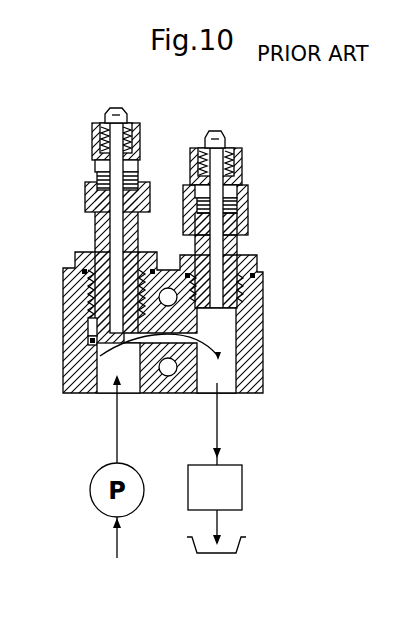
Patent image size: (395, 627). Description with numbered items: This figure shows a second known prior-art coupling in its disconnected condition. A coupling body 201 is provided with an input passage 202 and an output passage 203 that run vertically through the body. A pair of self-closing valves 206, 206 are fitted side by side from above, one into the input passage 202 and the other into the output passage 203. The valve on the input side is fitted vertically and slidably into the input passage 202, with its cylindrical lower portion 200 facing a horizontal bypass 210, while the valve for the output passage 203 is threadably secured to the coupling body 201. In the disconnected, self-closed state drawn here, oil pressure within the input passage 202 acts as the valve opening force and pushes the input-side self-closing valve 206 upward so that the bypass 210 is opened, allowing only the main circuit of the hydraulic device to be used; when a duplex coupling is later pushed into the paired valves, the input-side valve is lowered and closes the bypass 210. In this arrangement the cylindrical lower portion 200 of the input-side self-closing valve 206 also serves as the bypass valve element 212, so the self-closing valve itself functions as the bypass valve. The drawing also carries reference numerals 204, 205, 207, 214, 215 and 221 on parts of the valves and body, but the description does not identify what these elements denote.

The cylindrical lower portion 200 is at (66, 355).
The coupling body 201 is at (266, 340).
The input passage 202 is at (128, 378).
The output passage 203 is at (223, 390).
The seal element 204 is at (88, 326).
The valve sleeve 205 is at (212, 299).
The self-closing valve 206 is at (80, 156).
The valve cap 207 is at (116, 106).
The bypass 210 is at (170, 322).
The bypass valve element 212 is at (88, 341).
The valve stem 214 is at (127, 112).
The inlet chamber 215 is at (159, 363).
The thread 221 is at (88, 298).